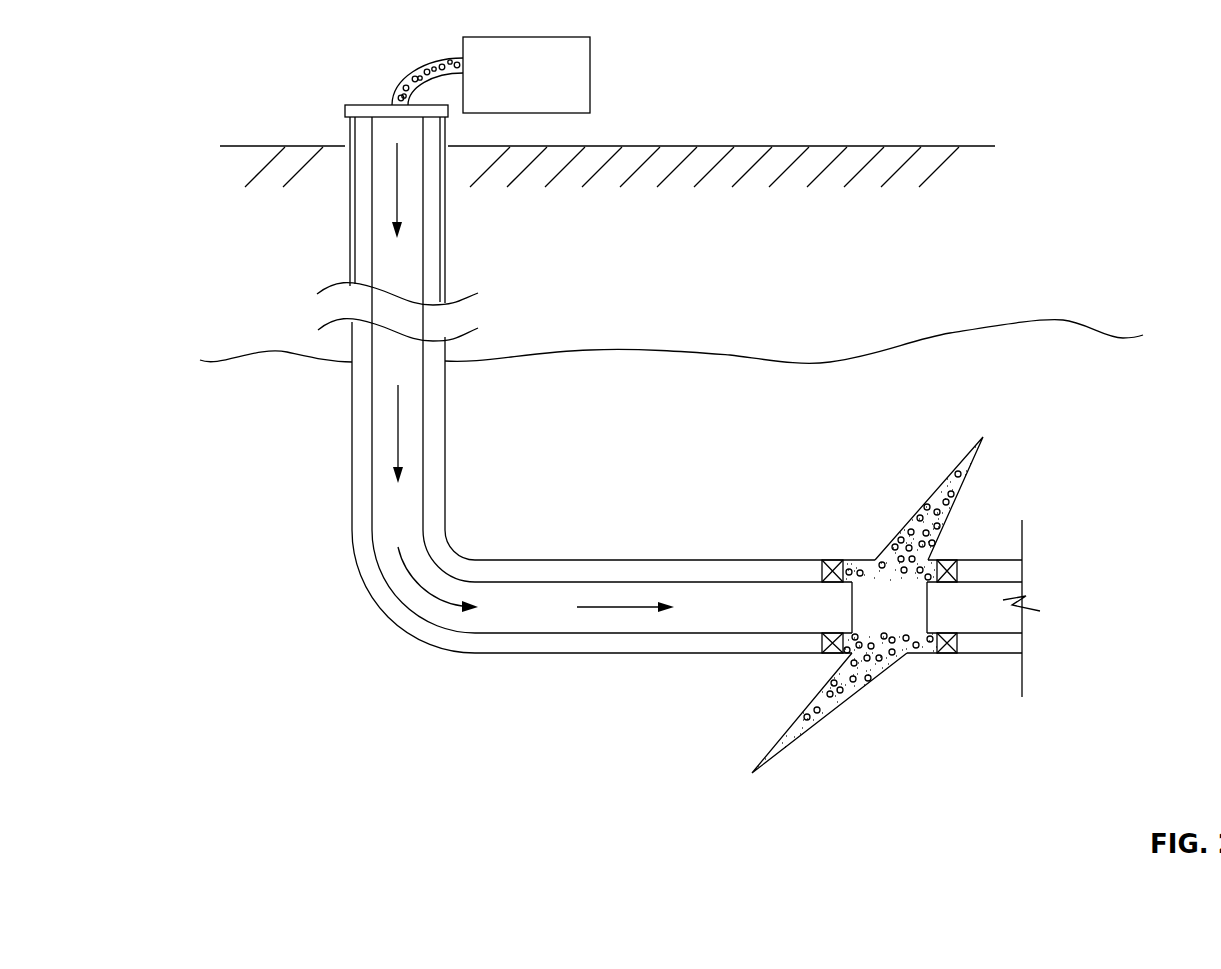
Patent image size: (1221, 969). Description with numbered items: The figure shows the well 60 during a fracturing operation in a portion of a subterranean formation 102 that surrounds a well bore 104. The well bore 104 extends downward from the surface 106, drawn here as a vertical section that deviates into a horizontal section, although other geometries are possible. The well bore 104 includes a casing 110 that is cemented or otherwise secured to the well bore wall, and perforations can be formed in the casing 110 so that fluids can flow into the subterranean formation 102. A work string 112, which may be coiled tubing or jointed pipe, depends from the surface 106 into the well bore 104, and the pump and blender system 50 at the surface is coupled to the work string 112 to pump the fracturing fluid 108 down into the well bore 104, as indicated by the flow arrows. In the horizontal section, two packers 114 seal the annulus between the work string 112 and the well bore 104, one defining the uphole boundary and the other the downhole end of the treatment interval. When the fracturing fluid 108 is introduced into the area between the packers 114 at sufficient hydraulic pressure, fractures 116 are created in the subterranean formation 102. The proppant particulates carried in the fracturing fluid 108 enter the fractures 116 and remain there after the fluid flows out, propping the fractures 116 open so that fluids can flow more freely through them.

The pump and blender system 50 is at (551, 88).
The well 60 is at (360, 646).
The subterranean formation 102 is at (708, 397).
The well bore 104 is at (362, 236).
The surface 106 is at (793, 147).
The fracturing fluid 108 is at (407, 78).
The casing 110 is at (355, 270).
The work string 112 is at (372, 477).
The packers 114 is at (833, 560).
The fractures 116 is at (908, 498).